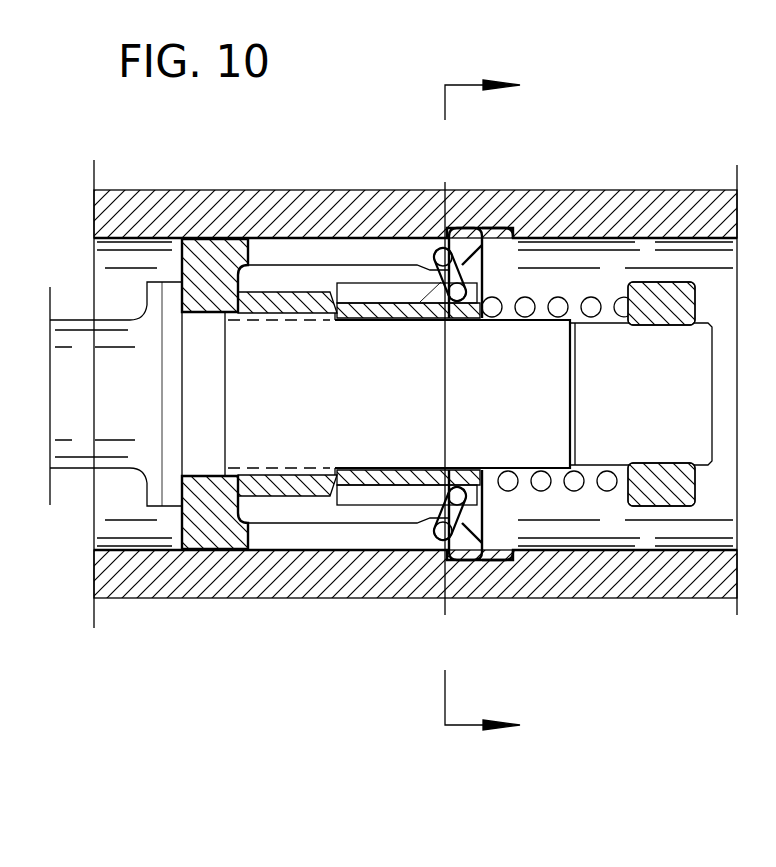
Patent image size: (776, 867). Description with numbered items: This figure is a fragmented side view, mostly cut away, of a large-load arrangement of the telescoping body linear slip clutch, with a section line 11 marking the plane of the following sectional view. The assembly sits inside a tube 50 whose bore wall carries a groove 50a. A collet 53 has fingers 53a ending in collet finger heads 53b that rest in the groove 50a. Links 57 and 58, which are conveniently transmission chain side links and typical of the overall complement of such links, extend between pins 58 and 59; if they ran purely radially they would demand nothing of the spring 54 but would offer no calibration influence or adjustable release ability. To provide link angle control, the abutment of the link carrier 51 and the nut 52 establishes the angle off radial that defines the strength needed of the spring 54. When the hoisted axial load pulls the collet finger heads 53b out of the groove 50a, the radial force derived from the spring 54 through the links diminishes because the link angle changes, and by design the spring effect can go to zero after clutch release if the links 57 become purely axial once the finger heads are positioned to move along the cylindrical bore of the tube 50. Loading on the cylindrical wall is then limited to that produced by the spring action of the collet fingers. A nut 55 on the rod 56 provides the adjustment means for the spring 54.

The section line 11- 11 is at (500, 408).
The tube 50 is at (690, 188).
The groove 50a is at (510, 226).
The link carrier 51 is at (372, 292).
The nut 52 is at (268, 290).
The collet 53 is at (197, 540).
The fingers 53a is at (278, 535).
The collet finger heads 53b is at (462, 553).
The spring 54 is at (576, 484).
The nut 55 is at (675, 500).
The rod 56 is at (125, 415).
The links 57 is at (441, 282).
The pin 58 is at (440, 525).
The pin 59 is at (459, 296).